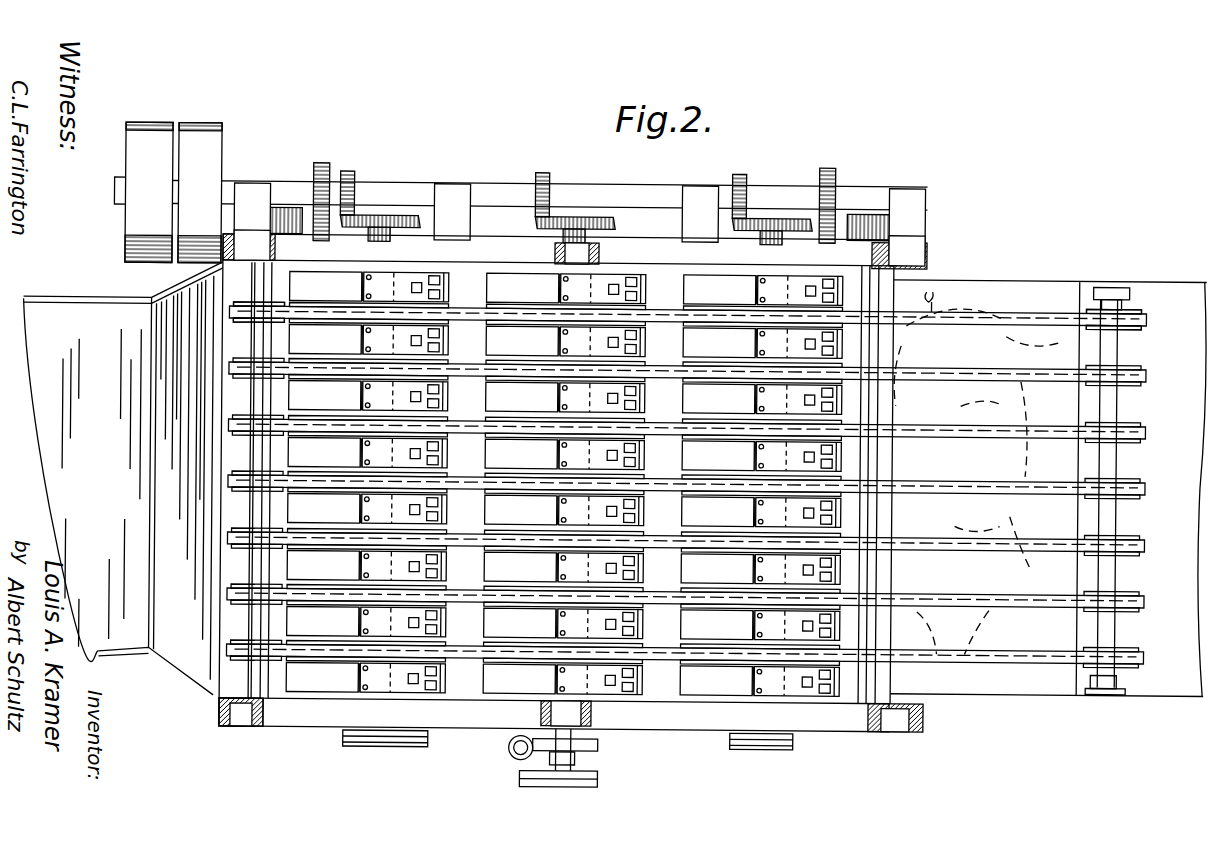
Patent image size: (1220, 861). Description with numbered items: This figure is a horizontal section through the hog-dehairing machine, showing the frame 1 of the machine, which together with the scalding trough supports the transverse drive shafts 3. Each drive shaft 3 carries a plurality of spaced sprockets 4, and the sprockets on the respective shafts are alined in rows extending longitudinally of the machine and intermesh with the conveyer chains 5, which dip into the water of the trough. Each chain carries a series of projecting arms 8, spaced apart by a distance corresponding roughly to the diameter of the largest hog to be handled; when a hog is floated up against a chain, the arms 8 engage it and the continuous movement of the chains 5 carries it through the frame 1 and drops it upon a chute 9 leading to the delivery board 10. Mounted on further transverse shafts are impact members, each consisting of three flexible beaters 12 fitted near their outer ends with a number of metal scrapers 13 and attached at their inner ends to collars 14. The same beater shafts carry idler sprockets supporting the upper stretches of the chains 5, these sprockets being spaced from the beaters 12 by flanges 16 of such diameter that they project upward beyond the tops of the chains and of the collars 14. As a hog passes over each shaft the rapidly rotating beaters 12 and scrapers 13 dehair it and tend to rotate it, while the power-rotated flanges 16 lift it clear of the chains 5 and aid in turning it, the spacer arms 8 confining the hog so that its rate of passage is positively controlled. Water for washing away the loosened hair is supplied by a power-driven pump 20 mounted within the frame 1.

The frame 1 is at (611, 244).
The drive shafts 3 is at (247, 505).
The sprockets 4 is at (248, 470).
The conveyer chains 5 is at (940, 474).
The projecting arms 8 is at (1005, 314).
The chute 9 is at (183, 612).
The delivery board 10 is at (83, 488).
The flexible beaters 12 is at (378, 280).
The metal scrapers 13 is at (420, 282).
The collars 14 is at (355, 502).
The flanges 16 is at (340, 410).
The power-driven pump 20 is at (540, 746).